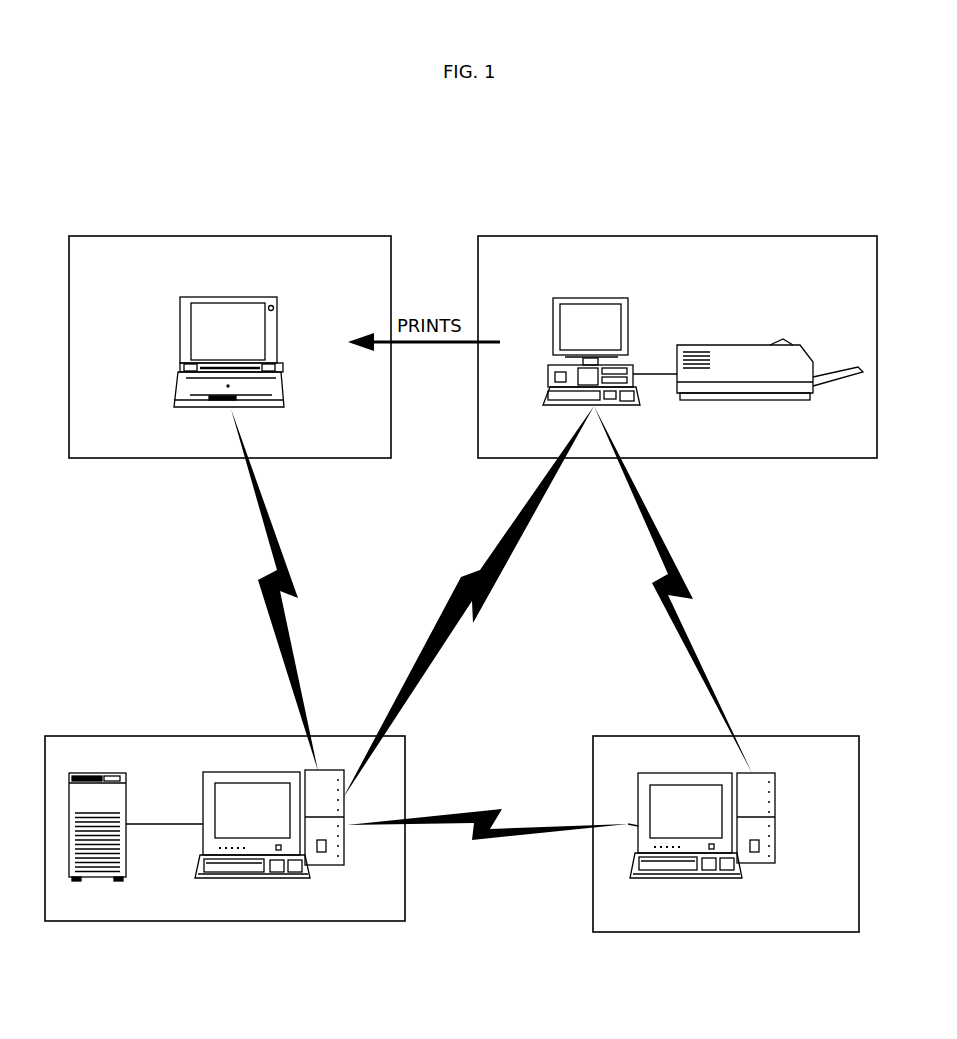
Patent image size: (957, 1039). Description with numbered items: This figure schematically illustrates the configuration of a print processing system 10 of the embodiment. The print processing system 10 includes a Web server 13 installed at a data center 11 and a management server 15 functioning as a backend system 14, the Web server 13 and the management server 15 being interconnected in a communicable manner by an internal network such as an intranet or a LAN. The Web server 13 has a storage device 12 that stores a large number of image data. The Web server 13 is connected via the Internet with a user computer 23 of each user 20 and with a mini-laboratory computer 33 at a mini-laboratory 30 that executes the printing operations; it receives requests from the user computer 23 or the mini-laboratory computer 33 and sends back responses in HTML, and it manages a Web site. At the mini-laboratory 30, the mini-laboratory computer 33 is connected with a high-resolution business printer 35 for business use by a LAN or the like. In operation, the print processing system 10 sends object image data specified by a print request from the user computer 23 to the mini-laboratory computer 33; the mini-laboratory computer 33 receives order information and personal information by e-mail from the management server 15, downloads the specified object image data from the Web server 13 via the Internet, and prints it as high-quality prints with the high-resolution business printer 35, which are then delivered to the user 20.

The print processing system 10 is at (858, 945).
The data center 11 is at (405, 903).
The storage device 12 is at (98, 880).
The Web server 13 is at (222, 770).
The backend system 14 is at (593, 888).
The management server 15 is at (775, 825).
The user 20 is at (158, 458).
The user computer 23 is at (227, 299).
The mini-laboratory 30 is at (780, 458).
The mini-laboratory computer 33 is at (593, 298).
The high-resolution business printer 35 is at (745, 345).